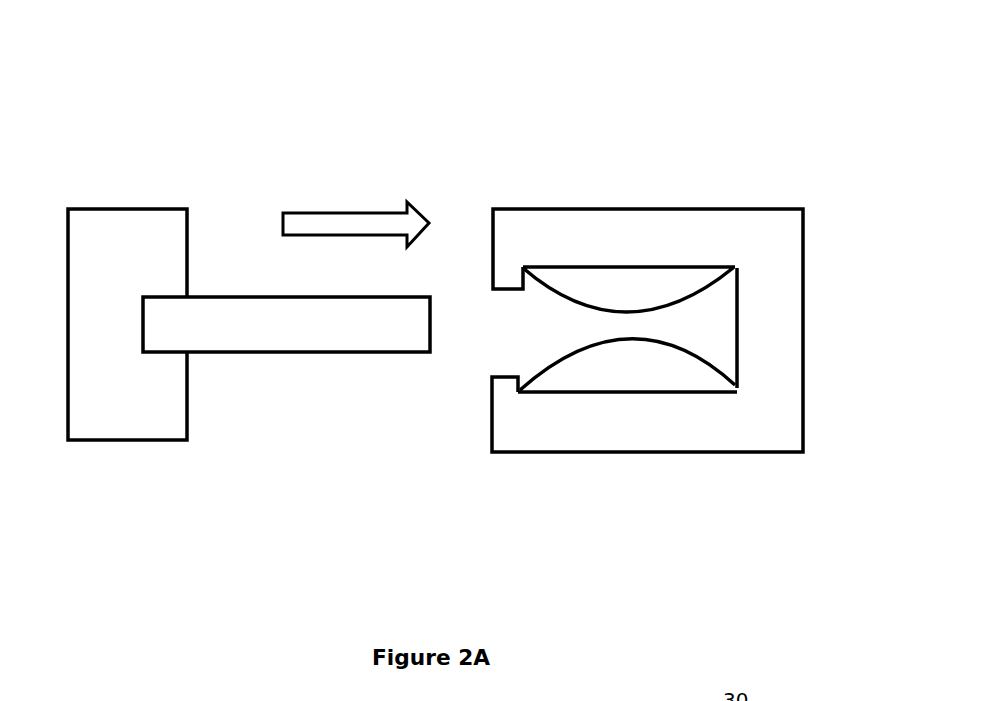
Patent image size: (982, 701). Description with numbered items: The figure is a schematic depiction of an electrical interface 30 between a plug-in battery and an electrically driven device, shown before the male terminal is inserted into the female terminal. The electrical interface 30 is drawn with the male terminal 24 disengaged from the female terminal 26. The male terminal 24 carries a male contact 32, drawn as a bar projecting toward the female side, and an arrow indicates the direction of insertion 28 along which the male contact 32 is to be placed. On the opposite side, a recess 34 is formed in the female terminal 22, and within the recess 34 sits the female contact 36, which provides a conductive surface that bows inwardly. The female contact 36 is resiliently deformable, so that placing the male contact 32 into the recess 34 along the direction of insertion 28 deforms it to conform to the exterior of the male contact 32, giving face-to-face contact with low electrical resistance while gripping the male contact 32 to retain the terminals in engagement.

The female terminal 22 is at (773, 230).
The male terminal 24 is at (172, 140).
The female terminal 26 is at (677, 289).
The direction of insertion 28 is at (323, 220).
The electrical interface 30 is at (677, 229).
The male contact 32 is at (348, 334).
The recess 34 is at (718, 325).
The female contact 36 is at (707, 362).